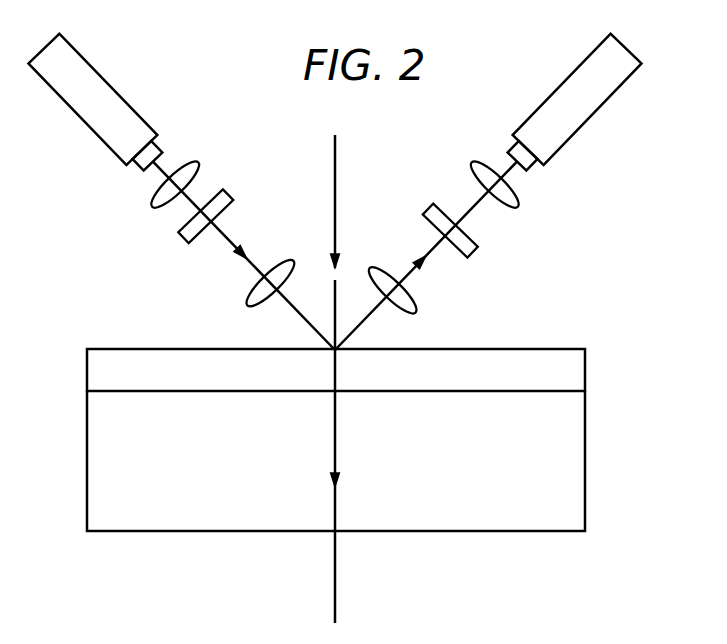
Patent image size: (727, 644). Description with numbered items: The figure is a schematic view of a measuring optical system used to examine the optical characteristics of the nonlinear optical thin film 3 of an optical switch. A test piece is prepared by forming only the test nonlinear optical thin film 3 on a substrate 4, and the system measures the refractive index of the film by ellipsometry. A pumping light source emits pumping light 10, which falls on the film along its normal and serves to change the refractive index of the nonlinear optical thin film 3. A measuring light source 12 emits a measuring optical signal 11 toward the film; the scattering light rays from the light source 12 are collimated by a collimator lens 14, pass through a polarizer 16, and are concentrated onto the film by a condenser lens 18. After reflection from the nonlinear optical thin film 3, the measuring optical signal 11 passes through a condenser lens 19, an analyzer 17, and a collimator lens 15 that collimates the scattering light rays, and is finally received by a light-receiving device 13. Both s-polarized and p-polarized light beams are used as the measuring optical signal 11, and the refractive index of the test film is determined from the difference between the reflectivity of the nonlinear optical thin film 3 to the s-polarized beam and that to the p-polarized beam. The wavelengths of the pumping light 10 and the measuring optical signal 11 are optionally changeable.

The nonlinear optical thin film 3 is at (567, 370).
The substrate 4 is at (567, 473).
The pumping light 10 is at (337, 170).
The measuring optical signal 11 is at (240, 256).
The measuring light source 12 is at (116, 91).
The light-receiving device 13 is at (621, 50).
The collimator lens 14 is at (156, 205).
The collimator lens 15 is at (518, 206).
The polarizer 16 is at (184, 236).
The analyzer 17 is at (477, 247).
The condenser lens 18 is at (289, 265).
The condenser lens 19 is at (420, 315).